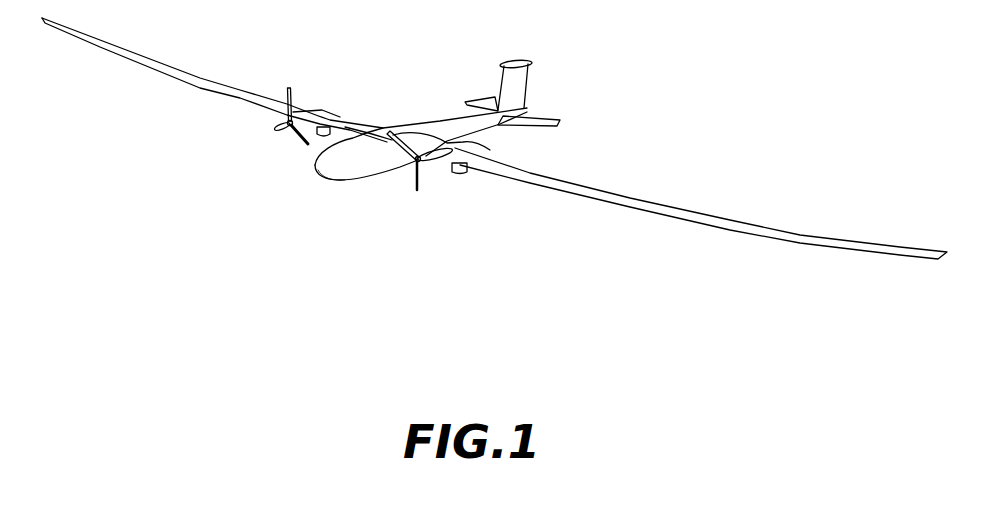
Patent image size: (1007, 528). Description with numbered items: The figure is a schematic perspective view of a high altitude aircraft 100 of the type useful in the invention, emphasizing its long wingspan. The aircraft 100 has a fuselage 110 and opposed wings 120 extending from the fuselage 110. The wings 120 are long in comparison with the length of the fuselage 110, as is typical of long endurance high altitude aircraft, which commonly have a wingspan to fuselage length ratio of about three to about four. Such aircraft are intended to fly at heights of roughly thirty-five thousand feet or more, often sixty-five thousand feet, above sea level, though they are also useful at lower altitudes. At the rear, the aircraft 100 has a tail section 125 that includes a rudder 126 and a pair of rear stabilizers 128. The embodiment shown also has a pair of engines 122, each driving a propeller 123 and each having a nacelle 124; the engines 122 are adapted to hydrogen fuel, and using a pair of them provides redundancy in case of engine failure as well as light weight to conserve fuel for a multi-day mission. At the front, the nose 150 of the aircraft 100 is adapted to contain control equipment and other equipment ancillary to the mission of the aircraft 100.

The aircraft 100 is at (494, 195).
The fuselage 110 is at (438, 126).
The wings 120 is at (224, 84).
The engines 122 is at (314, 110).
The propeller 123 is at (277, 130).
The nacelle 124 is at (305, 147).
The tail section 125 is at (511, 78).
The rudder 126 is at (505, 68).
The rear stabilizers 128 is at (471, 101).
The nose 150 is at (318, 194).